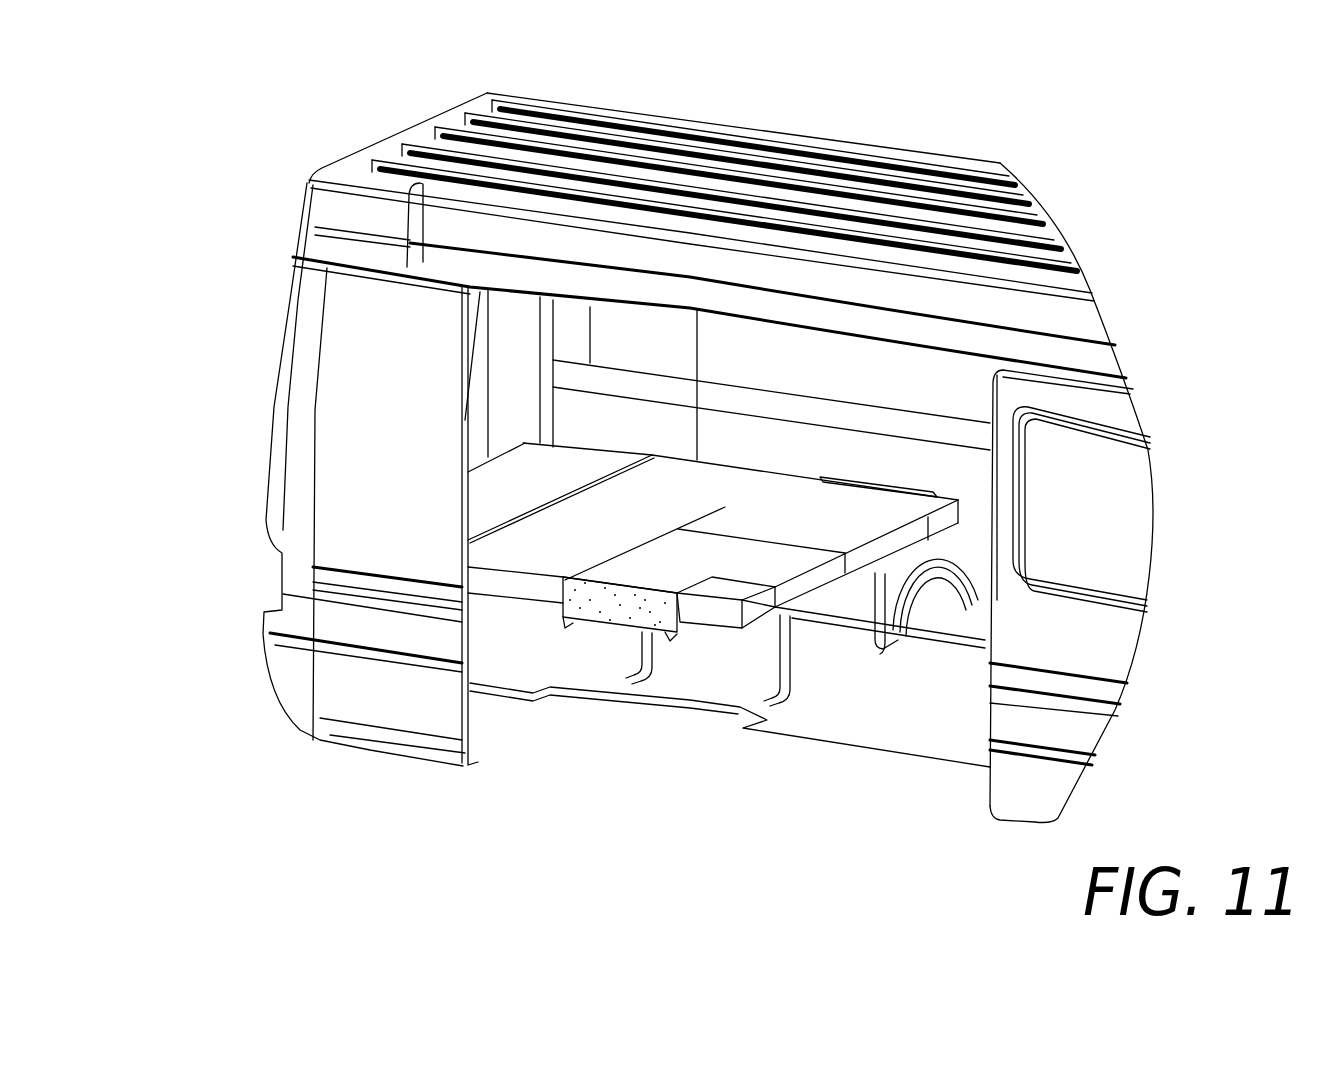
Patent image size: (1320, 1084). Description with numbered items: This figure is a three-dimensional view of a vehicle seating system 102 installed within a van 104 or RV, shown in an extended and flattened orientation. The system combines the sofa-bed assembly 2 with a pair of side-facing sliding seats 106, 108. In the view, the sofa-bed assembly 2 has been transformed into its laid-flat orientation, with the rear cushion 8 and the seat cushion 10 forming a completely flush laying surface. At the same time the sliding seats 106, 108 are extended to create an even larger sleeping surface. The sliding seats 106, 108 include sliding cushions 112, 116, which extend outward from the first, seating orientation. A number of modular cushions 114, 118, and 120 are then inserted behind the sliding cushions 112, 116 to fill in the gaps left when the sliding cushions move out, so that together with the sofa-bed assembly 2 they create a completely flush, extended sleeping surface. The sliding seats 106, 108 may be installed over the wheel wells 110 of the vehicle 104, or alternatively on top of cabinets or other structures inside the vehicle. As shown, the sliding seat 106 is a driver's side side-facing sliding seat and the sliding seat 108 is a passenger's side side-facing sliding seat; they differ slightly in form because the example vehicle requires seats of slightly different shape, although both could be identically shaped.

The sofa-bed assembly 2 is at (668, 420).
The rear cushion 8 is at (500, 498).
The seat cushion 10 is at (548, 563).
The vehicle seating system 102 is at (220, 184).
The van 104 is at (290, 298).
The driver's side side-facing sliding seat 106 is at (767, 535).
The passenger's side side-facing sliding seat 108 is at (810, 672).
The wheel wells 110 is at (928, 620).
The sliding cushion 112 is at (775, 513).
The modular cushion 114 is at (798, 483).
The sliding cushion 116 is at (685, 547).
The modular cushion 118 is at (622, 573).
The modular cushion 120 is at (722, 613).